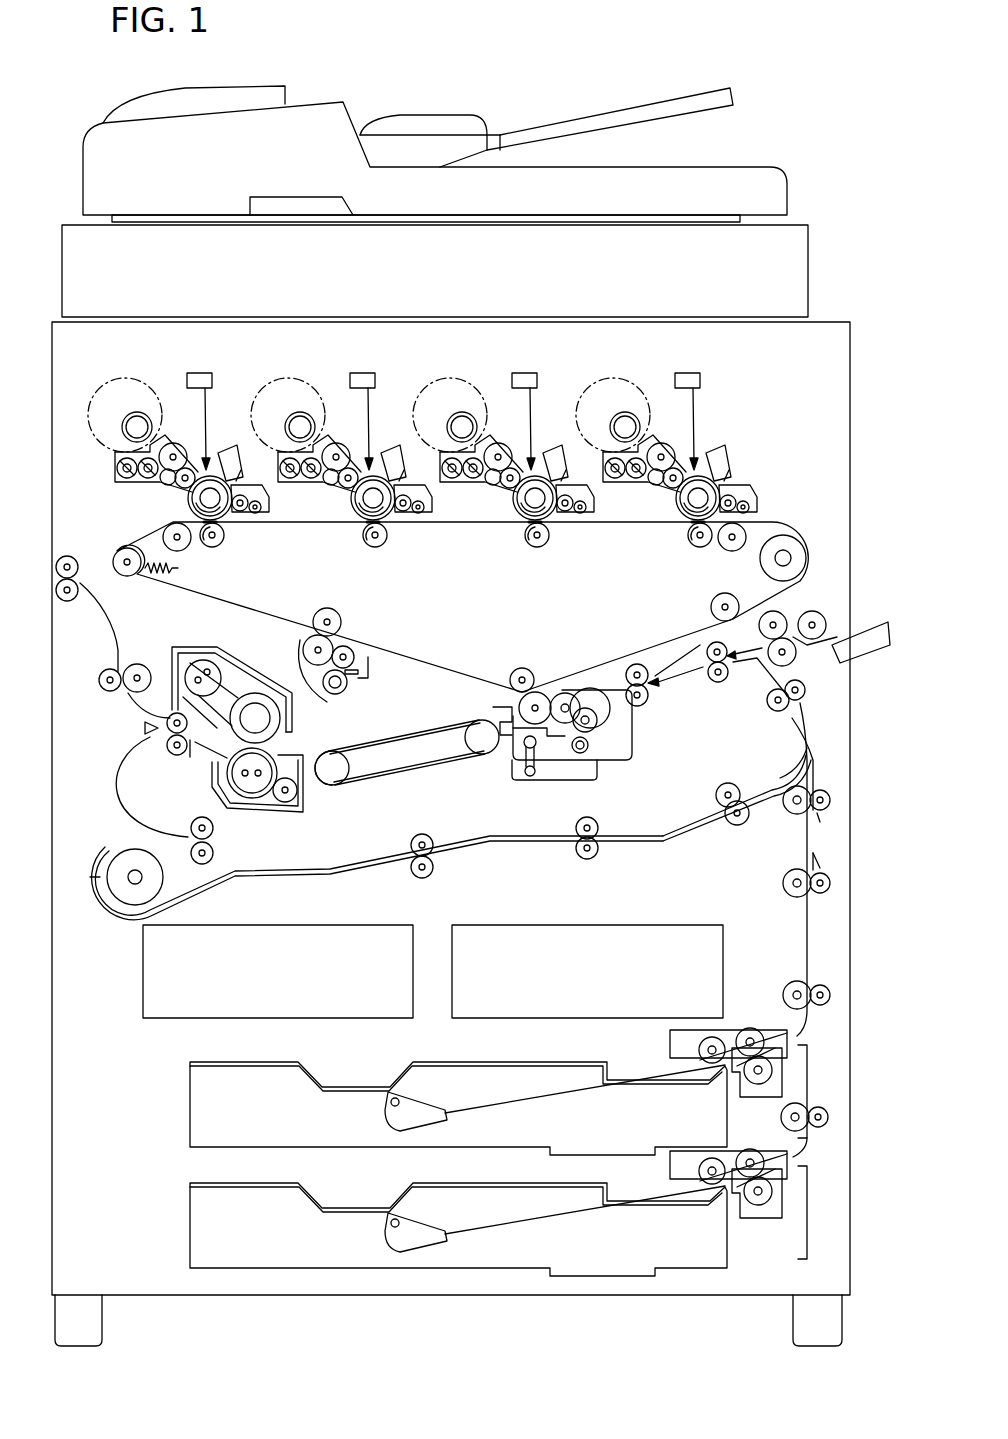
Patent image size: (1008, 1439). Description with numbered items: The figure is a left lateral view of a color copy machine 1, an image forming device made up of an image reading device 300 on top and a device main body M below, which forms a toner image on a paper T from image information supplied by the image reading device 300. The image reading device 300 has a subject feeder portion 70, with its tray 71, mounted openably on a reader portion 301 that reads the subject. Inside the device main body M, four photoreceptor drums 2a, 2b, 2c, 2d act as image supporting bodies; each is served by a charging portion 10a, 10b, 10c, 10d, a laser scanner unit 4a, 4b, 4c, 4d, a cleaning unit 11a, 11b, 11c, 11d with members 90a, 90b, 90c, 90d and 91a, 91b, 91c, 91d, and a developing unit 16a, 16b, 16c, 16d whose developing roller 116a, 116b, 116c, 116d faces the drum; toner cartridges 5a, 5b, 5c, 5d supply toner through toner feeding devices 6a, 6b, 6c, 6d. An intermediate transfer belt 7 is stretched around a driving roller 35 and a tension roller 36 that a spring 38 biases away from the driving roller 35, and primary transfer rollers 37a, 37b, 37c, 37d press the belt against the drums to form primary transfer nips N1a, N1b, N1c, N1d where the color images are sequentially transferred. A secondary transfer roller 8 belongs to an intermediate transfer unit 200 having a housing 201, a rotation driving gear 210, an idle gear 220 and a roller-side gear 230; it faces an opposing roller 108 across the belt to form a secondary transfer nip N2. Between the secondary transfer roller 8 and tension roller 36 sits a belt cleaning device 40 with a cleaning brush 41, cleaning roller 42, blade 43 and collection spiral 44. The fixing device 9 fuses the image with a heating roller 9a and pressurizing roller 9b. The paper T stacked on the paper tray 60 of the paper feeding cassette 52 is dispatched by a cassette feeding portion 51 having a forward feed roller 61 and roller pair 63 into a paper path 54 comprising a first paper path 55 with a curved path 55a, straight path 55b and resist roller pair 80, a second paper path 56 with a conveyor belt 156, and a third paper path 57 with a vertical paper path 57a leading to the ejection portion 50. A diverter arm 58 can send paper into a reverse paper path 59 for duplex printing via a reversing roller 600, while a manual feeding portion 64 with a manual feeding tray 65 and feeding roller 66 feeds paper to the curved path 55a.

The color copy machine 1 is at (784, 104).
The image reading device 300 is at (805, 160).
The reader portion 301 is at (798, 238).
The subject feeder portion 70 is at (298, 112).
The document feeder tray 71 is at (503, 122).
The device main body M is at (828, 322).
The photoreceptor drum 2a is at (188, 503).
The photoreceptor drum 2b is at (347, 512).
The photoreceptor drum 2c is at (509, 512).
The photoreceptor drum 2d is at (671, 512).
The laser scanner unit 4a is at (202, 373).
The laser scanner unit 4b is at (365, 401).
The laser scanner unit 4c is at (526, 401).
The laser scanner unit 4d is at (690, 401).
The toner cartridge 5a is at (134, 380).
The toner cartridge 5b is at (288, 392).
The toner cartridge 5c is at (450, 392).
The toner cartridge 5d is at (613, 392).
The toner feeding device 6a is at (140, 414).
The toner feeding device 6b is at (308, 397).
The toner feeding device 6c is at (470, 397).
The toner feeding device 6d is at (633, 397).
The intermediate transfer belt 7 is at (405, 525).
The secondary transfer roller 8 is at (518, 702).
The fixing device 9 is at (266, 754).
The heating roller 9a is at (266, 700).
The pressurizing roller 9b is at (255, 793).
The charging portion 10a is at (230, 448).
The charging portion 10b is at (385, 440).
The charging portion 10c is at (548, 440).
The charging portion 10d is at (710, 440).
The cleaning device 11a is at (245, 488).
The cleaning device 11b is at (415, 487).
The cleaning device 11c is at (576, 487).
The cleaning device 11d is at (741, 487).
The developing unit 16a is at (175, 445).
The developing unit 16b is at (319, 443).
The developing unit 16c is at (481, 443).
The developing unit 16d is at (644, 443).
The driving roller 35 is at (790, 545).
The tension roller 36 is at (123, 553).
The primary transfer roller 37a is at (214, 548).
The primary transfer roller 37b is at (363, 557).
The primary transfer roller 37c is at (526, 557).
The primary transfer roller 37d is at (687, 557).
The spring 38 is at (180, 568).
The belt cleaning device 40 is at (370, 664).
The cleaning brush 41 is at (333, 645).
The cleaning roller 42 is at (354, 656).
The blade 43 is at (352, 676).
The collection spiral 44 is at (335, 696).
The ejection portion 50 is at (55, 570).
The cassette feeding portion 51 is at (538, 1127).
The paper feeding cassette 52 is at (432, 1104).
The paper path 54 is at (828, 764).
The first paper path 55 is at (815, 838).
The curved path 55a is at (812, 716).
The straight path 55b is at (703, 680).
The second paper path 56 is at (425, 727).
The third paper path 57 is at (127, 635).
The vertical paper path 57a is at (118, 608).
The diverter arm 58 is at (142, 728).
The reverse paper path 59 is at (320, 878).
The paper tray 60 is at (560, 1098).
The forward feed roller 61 is at (715, 1036).
The roller pair 63 is at (750, 1028).
The manual feeding portion 64 is at (868, 612).
The manual feeding tray 65 is at (855, 652).
The feeding roller 66 is at (813, 611).
The resist roller pair 80 is at (650, 690).
The cleaning blade 90a is at (238, 478).
The cleaning blade 90b is at (403, 427).
The cleaning blade 90c is at (565, 427).
The cleaning blade 90d is at (745, 450).
The waste toner conveying member 91a is at (262, 508).
The waste toner conveying member 91b is at (440, 541).
The waste toner conveying member 91c is at (604, 541).
The waste toner conveying member 91d is at (779, 493).
The opposing roller 108 is at (526, 668).
The developing roller 116a is at (185, 493).
The developing roller 116b is at (316, 484).
The developing roller 116c is at (478, 484).
The developing roller 116d is at (641, 484).
The conveyor belt 156 is at (410, 778).
The intermediate transfer unit 200 is at (640, 740).
The housing 201 is at (612, 712).
The rotation driving gear 210 is at (595, 728).
The idle gear 220 is at (560, 750).
The roller-side gear 230 is at (526, 722).
The reversing roller 600 is at (118, 865).
The primary transfer nip N1a is at (214, 526).
The primary transfer nip N1b is at (341, 546).
The primary transfer nip N1c is at (505, 546).
The primary transfer nip N1d is at (666, 546).
The secondary transfer nip N2 is at (540, 690).
The paper T is at (220, 1113).